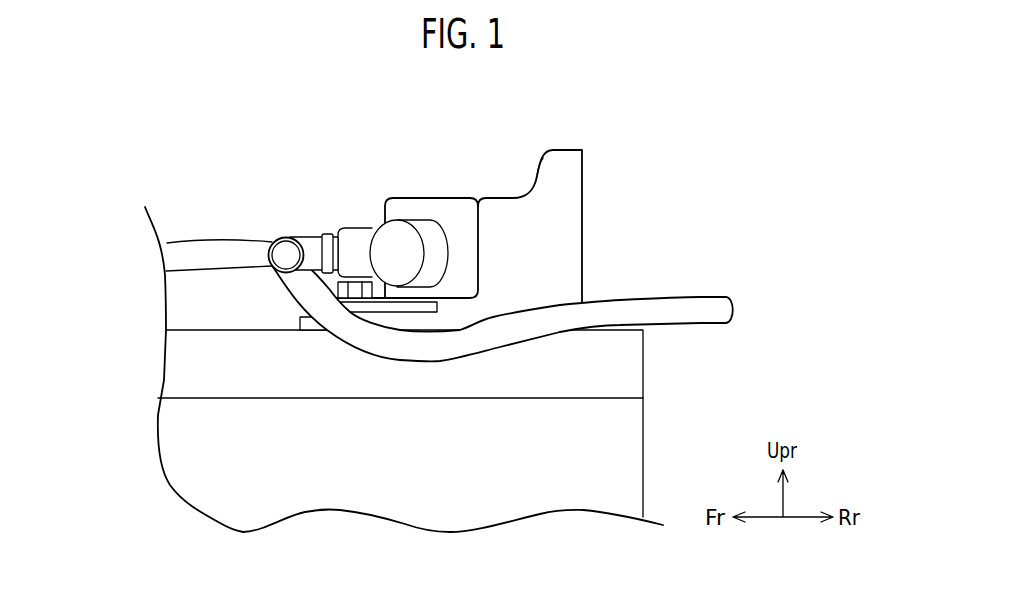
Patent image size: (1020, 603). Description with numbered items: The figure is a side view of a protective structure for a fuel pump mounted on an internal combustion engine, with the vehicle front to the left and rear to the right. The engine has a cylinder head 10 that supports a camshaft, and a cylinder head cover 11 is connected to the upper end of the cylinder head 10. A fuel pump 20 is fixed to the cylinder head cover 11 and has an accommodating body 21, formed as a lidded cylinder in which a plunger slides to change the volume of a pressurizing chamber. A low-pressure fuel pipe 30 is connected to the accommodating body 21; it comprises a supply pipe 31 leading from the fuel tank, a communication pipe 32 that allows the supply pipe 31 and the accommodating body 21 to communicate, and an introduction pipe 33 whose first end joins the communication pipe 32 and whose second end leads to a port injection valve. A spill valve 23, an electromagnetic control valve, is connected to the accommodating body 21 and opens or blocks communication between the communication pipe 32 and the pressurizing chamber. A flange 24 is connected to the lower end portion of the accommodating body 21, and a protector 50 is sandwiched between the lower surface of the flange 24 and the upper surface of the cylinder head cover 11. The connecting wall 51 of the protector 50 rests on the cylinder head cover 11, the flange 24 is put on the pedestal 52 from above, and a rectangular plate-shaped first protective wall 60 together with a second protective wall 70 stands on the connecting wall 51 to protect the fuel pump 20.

The cylinder head 10 is at (643, 438).
The cylinder head cover 11 is at (645, 363).
The fuel pump 20 is at (405, 256).
The accommodating body 21 is at (447, 195).
The spill valve 23 is at (380, 247).
The flange 24 is at (367, 303).
The low-pressure fuel pipe 30 is at (278, 283).
The supply pipe 31 is at (673, 298).
The communication pipe 32 is at (303, 237).
The introduction pipe 33 is at (210, 243).
The protector 50 is at (448, 246).
The connecting wall 51 is at (302, 320).
The pedestal 52 is at (395, 313).
The first protective wall 60 is at (583, 185).
The second protective wall 70 is at (543, 157).